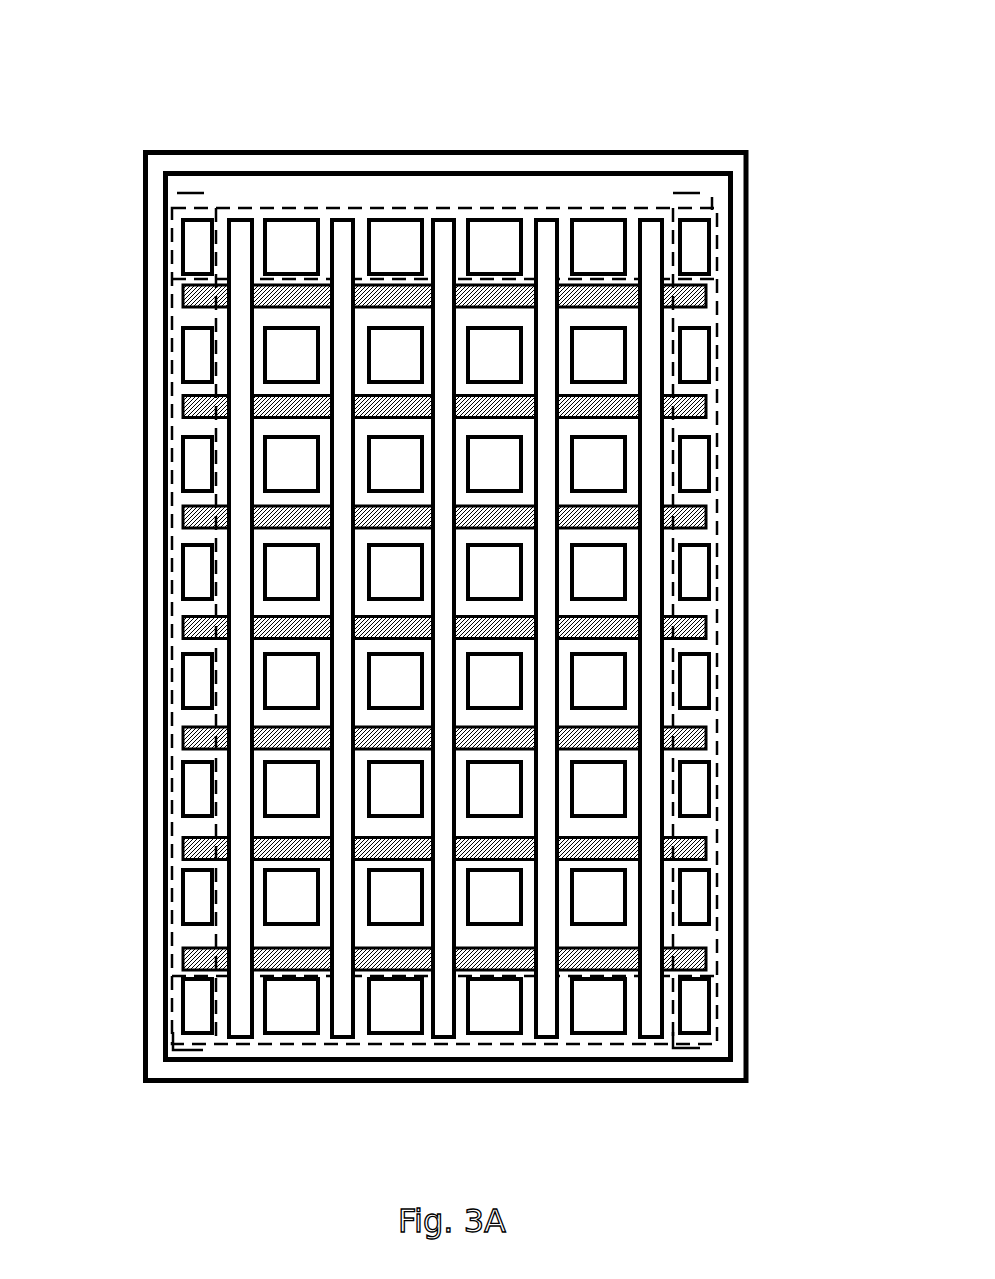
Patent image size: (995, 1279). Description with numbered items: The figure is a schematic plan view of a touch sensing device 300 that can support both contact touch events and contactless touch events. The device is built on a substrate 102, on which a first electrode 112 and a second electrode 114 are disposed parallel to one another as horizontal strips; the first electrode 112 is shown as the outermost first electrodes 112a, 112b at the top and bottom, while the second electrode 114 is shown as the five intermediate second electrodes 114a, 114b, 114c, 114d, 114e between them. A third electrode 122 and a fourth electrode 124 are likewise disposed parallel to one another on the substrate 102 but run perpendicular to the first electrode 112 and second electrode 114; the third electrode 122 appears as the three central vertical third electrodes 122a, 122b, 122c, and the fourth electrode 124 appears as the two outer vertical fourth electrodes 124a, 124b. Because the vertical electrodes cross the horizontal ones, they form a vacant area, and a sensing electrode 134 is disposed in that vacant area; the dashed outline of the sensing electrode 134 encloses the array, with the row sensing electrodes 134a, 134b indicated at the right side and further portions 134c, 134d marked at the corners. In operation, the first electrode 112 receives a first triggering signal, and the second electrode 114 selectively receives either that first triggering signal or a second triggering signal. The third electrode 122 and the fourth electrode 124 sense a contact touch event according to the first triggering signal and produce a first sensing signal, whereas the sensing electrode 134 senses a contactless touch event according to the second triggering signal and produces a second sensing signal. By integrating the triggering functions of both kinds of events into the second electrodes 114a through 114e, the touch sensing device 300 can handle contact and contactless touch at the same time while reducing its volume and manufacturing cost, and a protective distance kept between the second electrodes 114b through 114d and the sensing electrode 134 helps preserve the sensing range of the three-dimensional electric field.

The touch sensing device 300 is at (141, 34).
The substrate 102 is at (155, 193).
The first electrode 112 is at (449, 624).
The first electrode 112a is at (183, 300).
The first electrode 112b is at (183, 962).
The second electrode 114 is at (533, 628).
The second electrode 114a is at (706, 401).
The second electrode 114b is at (706, 512).
The second electrode 114c is at (706, 622).
The second electrode 114d is at (706, 733).
The second electrode 114e is at (706, 843).
The third electrode 122 is at (455, 547).
The third electrode 122a is at (340, 215).
The third electrode 122b is at (437, 215).
The third electrode 122c is at (543, 215).
The fourth electrode 124 is at (448, 695).
The fourth electrode 124a is at (245, 1040).
The fourth electrode 124b is at (655, 1040).
The sensing electrode 134 is at (494, 614).
The row sensing electrode 134a is at (718, 243).
The row sensing electrode 134b is at (722, 1006).
The dummy cell 134c is at (192, 190).
The dummy cell 134d is at (702, 1052).